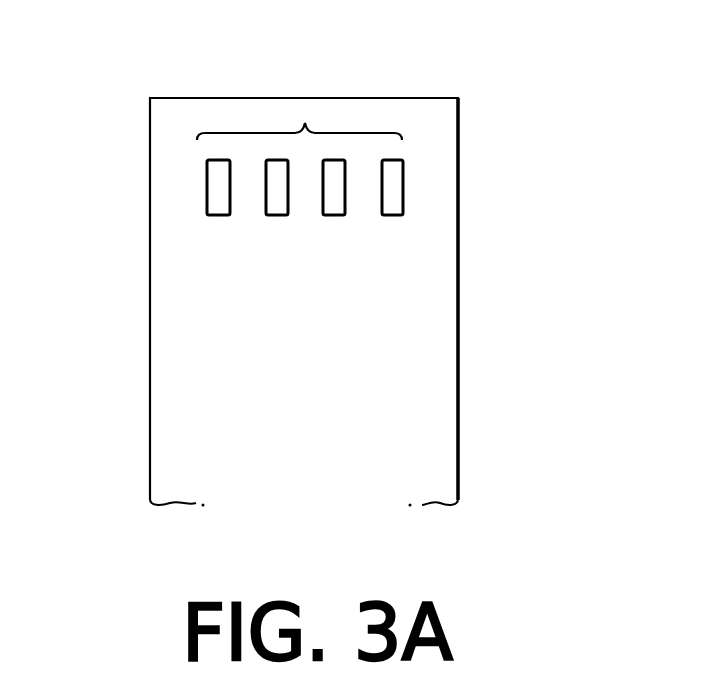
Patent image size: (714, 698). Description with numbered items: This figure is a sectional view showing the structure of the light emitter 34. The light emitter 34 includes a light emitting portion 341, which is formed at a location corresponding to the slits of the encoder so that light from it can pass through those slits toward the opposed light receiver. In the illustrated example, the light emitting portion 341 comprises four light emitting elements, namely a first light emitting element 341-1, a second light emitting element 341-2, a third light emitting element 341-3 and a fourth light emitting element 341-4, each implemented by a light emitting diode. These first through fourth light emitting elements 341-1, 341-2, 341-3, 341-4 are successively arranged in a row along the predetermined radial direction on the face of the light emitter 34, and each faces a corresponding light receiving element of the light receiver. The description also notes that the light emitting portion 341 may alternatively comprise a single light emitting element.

The light emitter 34 is at (150, 428).
The light emitting portion 341 is at (305, 123).
The first light emitting element 341-1 is at (212, 217).
The second light emitting element 341-2 is at (277, 217).
The third light emitting element 341-3 is at (330, 217).
The fourth light emitting element 341-4 is at (388, 217).